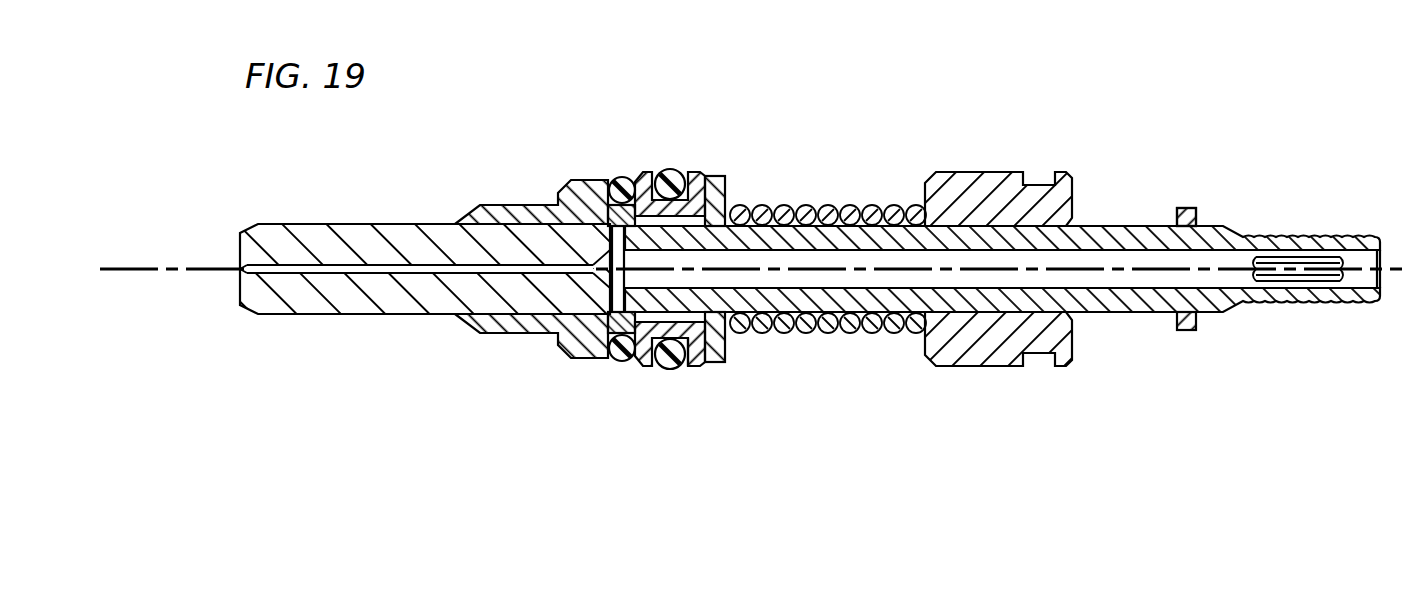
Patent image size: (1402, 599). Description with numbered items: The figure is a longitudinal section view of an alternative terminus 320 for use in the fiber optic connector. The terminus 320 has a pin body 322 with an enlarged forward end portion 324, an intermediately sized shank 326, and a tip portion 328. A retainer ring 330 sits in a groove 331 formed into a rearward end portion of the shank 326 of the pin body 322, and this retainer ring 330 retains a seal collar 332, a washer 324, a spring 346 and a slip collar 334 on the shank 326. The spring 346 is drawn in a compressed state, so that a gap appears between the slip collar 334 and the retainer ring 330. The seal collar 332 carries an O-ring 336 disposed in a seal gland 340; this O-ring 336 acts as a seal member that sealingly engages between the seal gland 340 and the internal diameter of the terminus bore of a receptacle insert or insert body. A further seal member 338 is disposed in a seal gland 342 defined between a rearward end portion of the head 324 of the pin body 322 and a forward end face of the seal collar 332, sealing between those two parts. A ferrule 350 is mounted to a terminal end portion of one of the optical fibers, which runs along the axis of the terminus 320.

The terminus 320 is at (228, 333).
The pin body 322 is at (1129, 221).
The enlarged forward end portion 324 is at (535, 190).
The shank 326 is at (1113, 306).
The tip portion 328 is at (1305, 240).
The retainer ring 330 is at (1177, 207).
The groove 331 is at (1196, 209).
The seal collar 332 is at (697, 174).
The slip collar 334 is at (975, 192).
The O-ring 336 is at (688, 367).
The seal member 338 is at (619, 177).
The seal gland 340 is at (667, 369).
The seal gland 342 is at (618, 361).
The spring 346 is at (805, 326).
The ferrule 350 is at (385, 295).